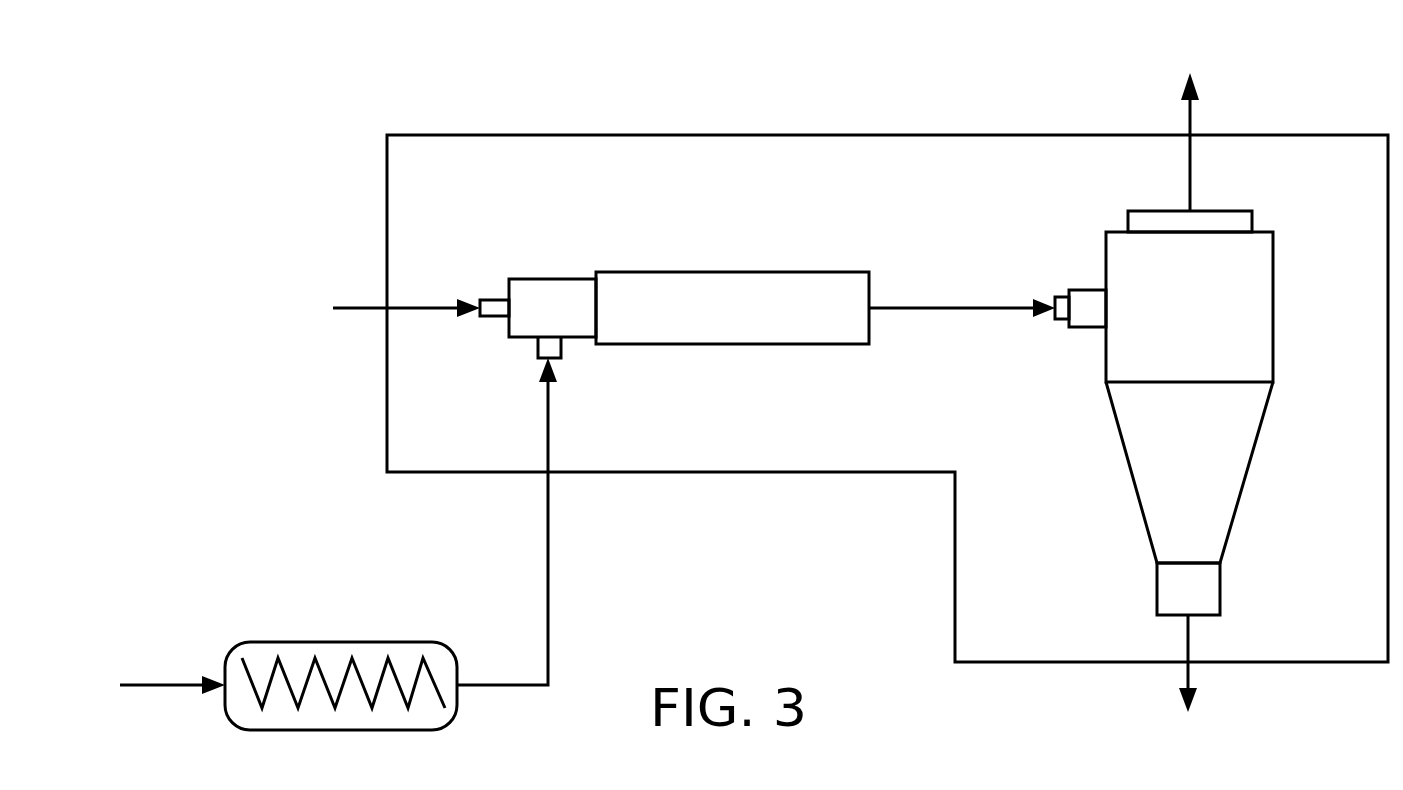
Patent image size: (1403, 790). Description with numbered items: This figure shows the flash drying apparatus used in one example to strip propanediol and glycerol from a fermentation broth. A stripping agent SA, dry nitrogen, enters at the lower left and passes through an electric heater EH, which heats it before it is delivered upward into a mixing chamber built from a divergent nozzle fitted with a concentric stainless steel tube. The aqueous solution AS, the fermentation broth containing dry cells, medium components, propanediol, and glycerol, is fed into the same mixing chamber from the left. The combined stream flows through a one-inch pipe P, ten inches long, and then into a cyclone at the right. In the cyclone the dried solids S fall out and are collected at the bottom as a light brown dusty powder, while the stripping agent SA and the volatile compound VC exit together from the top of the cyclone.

The pipe P is at (731, 270).
The electric heater EH is at (300, 642).
The aqueous solution AS is at (389, 304).
The stripping agent SA is at (156, 683).
The volatile compound VC is at (1188, 111).
The solids S is at (1188, 680).